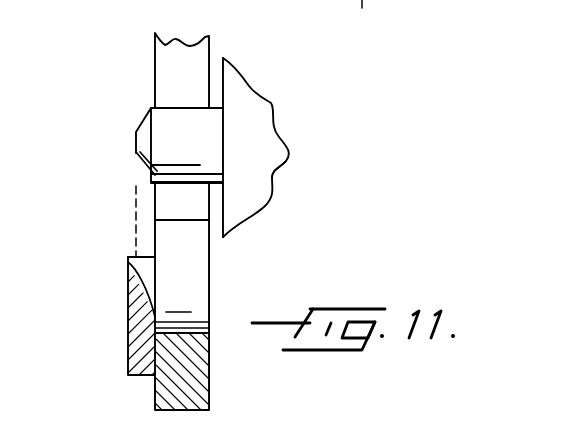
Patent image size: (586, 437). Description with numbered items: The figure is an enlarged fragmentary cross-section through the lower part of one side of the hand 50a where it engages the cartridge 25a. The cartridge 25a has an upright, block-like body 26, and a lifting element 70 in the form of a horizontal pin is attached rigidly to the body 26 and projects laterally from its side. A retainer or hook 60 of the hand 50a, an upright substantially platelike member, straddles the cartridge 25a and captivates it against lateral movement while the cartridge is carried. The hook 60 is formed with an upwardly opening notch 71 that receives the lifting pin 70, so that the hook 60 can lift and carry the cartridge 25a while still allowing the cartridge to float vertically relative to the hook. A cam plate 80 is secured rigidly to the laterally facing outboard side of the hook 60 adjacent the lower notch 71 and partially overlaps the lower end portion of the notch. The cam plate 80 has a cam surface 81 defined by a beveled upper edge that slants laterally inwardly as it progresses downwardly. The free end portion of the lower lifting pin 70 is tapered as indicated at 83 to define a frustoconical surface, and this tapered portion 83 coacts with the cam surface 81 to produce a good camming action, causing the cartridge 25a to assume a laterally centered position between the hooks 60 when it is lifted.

The lifting element 70 is at (173, 112).
The tapered end portion 83 is at (139, 170).
The cam surface 81 is at (147, 280).
The cam plate 80 is at (132, 337).
The notch 71 is at (187, 328).
The retainer or hook 60 is at (197, 382).
The hand 50a is at (153, 388).
The cartridge 25a is at (262, 97).
The body 26 is at (266, 173).